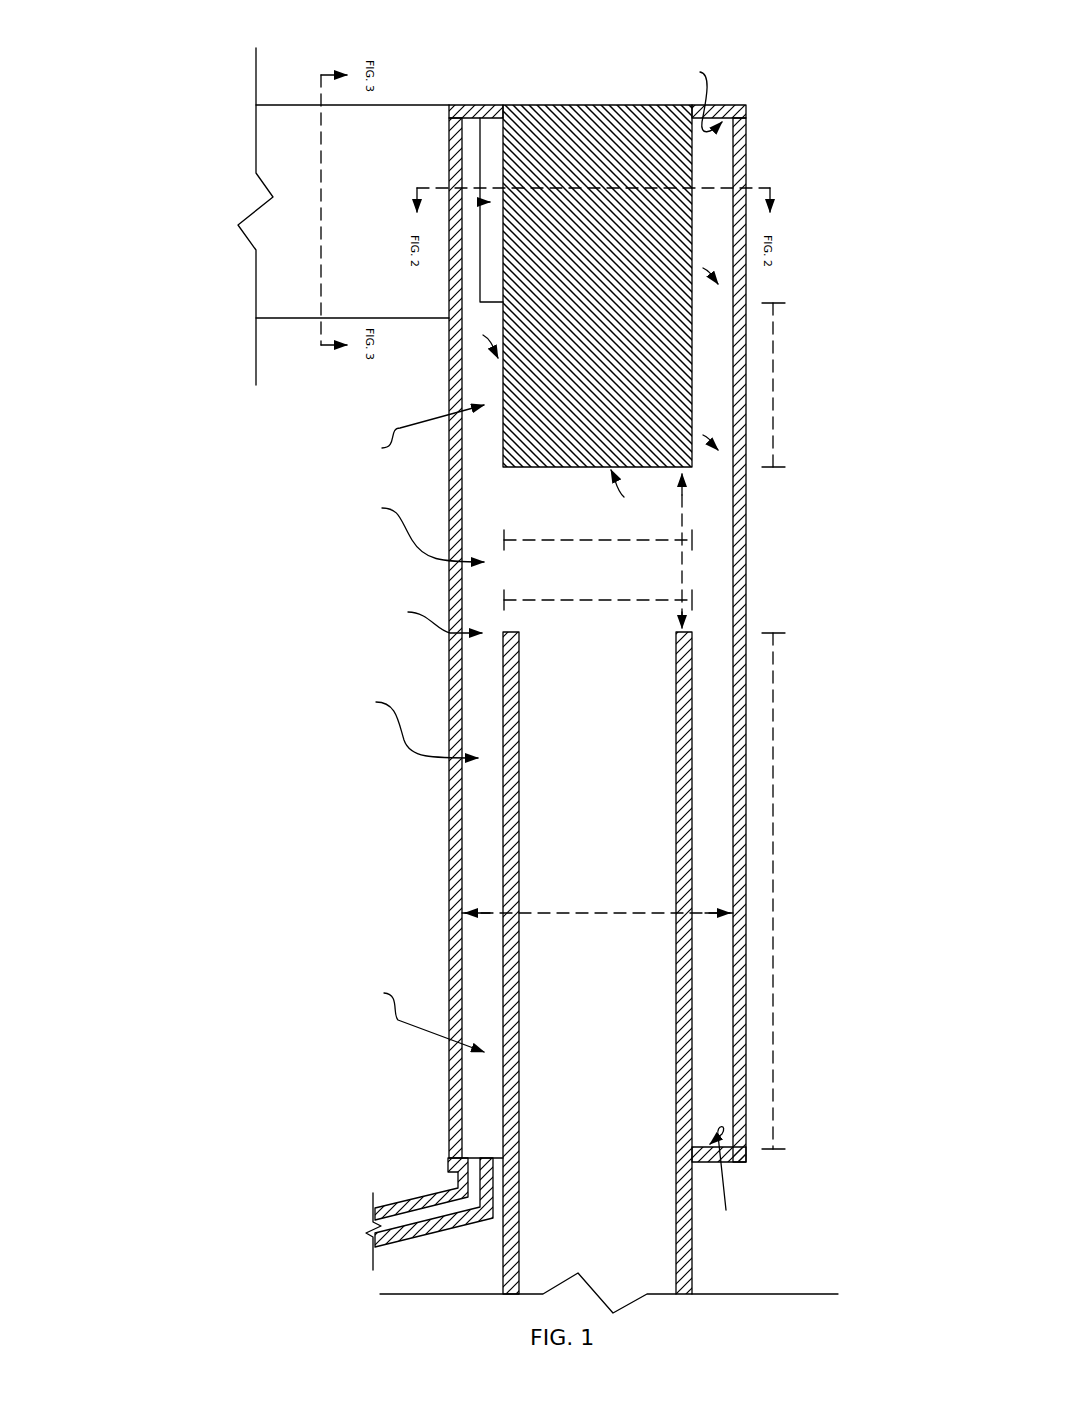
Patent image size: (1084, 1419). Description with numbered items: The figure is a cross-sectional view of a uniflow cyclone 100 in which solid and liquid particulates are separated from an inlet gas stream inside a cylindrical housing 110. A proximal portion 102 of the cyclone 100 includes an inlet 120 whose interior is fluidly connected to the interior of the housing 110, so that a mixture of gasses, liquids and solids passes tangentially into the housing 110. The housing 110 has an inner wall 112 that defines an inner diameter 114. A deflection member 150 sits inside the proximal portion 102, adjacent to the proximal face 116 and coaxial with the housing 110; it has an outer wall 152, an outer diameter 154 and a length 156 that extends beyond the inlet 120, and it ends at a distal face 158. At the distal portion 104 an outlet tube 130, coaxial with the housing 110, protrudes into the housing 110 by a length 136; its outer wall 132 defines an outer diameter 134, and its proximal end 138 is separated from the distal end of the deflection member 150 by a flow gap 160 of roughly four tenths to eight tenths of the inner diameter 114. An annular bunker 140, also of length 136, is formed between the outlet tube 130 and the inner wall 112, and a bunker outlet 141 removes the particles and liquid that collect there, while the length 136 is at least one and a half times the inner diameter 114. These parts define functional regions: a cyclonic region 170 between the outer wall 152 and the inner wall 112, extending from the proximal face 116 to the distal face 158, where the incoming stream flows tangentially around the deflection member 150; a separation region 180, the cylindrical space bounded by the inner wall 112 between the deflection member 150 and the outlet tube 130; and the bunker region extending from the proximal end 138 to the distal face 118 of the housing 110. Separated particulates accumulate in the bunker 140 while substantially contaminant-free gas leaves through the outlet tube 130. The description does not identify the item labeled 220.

The cyclone 100 is at (172, 48).
The proximal portion 102 is at (780, 94).
The distal portion 104 is at (774, 1169).
The cylindrical housing 110 is at (449, 385).
The inner wall 112 is at (746, 560).
The inner diameter 114 is at (626, 913).
The proximal face 116 is at (692, 99).
The distal face 118 is at (726, 1212).
The inlet 120 is at (380, 140).
The outlet tube 130 is at (676, 772).
The outer wall 132 is at (510, 790).
The outer diameter 134 is at (592, 600).
The length 136 is at (773, 902).
The proximal end 138 is at (427, 619).
The annular bunker 140 is at (417, 1020).
The bunker outlet 141 is at (410, 1197).
The deflection member 150 is at (613, 325).
The outer wall 152 is at (672, 443).
The outer diameter 154 is at (598, 540).
The length 156 is at (773, 395).
The distal face 158 is at (622, 498).
The flow gap 160 is at (682, 578).
The cyclonic region 170 is at (415, 433).
The separation region 180 is at (415, 532).
The flow arrow 220 is at (410, 727).